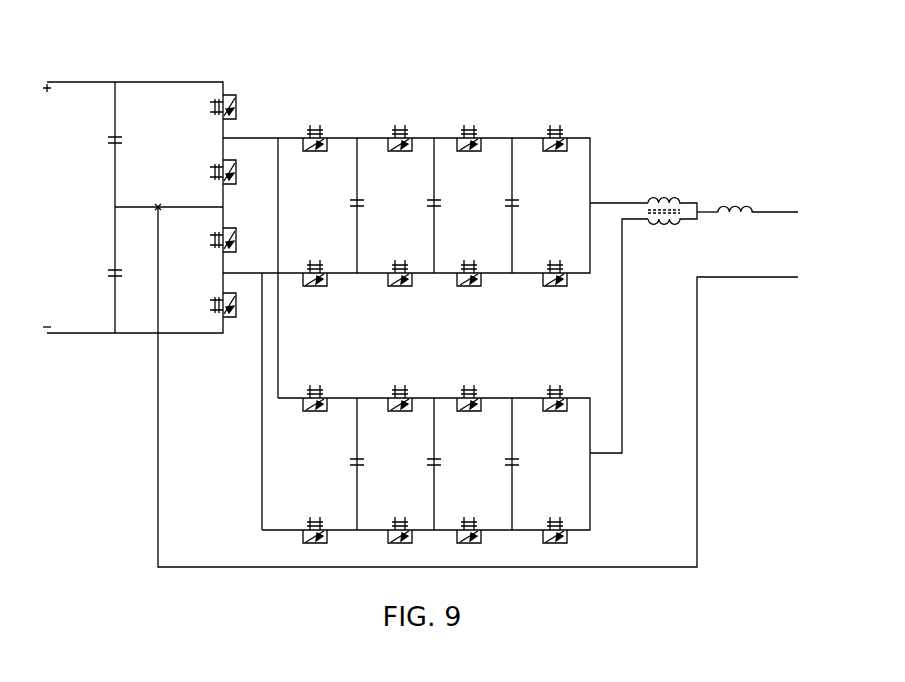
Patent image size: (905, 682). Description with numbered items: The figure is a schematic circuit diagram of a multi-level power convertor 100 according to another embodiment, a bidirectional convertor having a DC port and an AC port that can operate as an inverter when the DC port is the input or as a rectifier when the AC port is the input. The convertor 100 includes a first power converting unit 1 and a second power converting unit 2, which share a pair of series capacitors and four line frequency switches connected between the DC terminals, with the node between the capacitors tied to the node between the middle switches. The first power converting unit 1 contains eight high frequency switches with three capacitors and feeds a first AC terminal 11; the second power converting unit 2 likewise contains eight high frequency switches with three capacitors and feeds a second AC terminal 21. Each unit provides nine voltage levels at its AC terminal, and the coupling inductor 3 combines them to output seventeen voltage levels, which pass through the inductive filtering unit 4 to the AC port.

The multi-level power convertor 100 is at (178, 42).
The first power converting unit 1 is at (291, 133).
The second power converting unit 2 is at (259, 475).
The first AC terminal 11 is at (617, 200).
The second AC terminal 21 is at (617, 460).
The coupling inductor 3 is at (664, 200).
The inductive filtering unit 4 is at (733, 207).